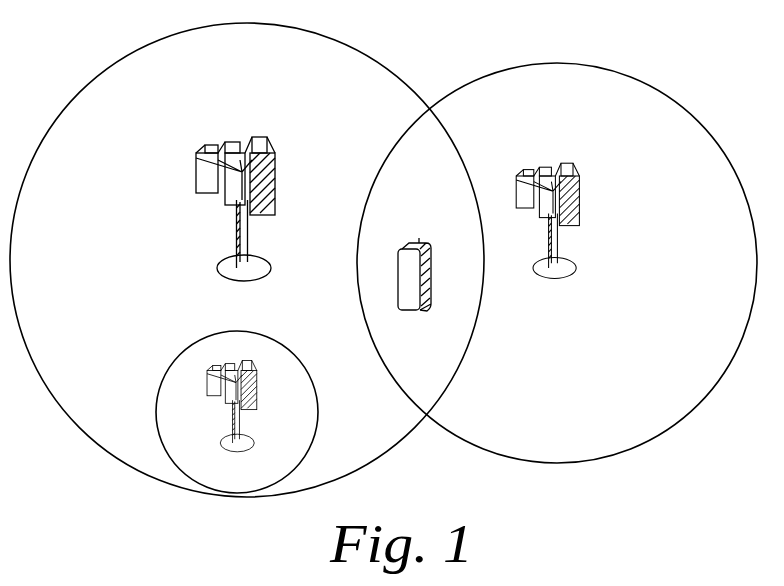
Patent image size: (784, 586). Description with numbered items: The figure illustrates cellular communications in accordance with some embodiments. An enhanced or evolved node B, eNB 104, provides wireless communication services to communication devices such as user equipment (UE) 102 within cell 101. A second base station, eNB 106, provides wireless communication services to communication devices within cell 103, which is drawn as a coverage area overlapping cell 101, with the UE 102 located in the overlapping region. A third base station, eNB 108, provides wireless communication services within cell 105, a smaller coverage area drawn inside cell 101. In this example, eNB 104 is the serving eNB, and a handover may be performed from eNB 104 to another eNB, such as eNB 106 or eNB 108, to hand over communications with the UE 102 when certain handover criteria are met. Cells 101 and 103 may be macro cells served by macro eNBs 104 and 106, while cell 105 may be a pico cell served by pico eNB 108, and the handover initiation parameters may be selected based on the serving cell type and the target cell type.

The cell 101 is at (363, 55).
The user equipment (UE) 102 is at (413, 273).
The cell 103 is at (650, 90).
The eNB 104 is at (200, 153).
The cell 105 is at (288, 350).
The eNB 106 is at (575, 182).
The eNB 108 is at (228, 402).